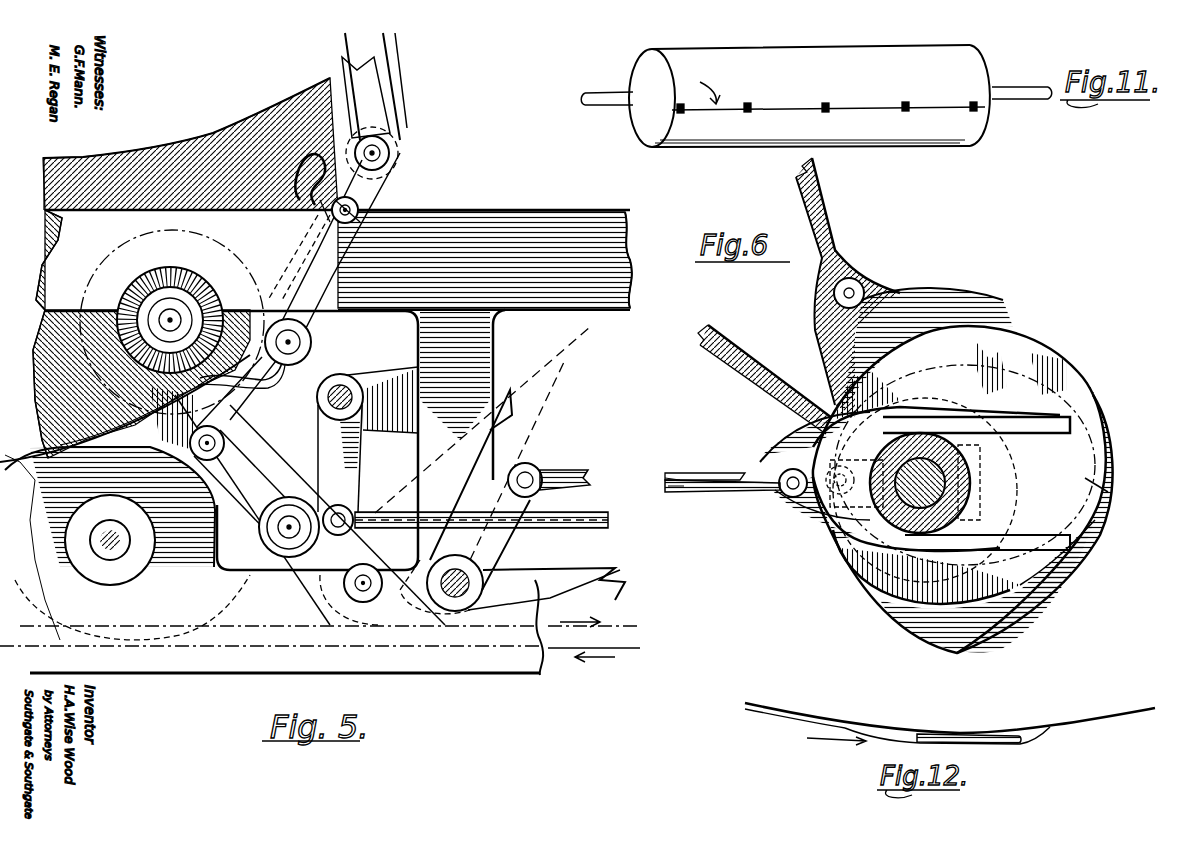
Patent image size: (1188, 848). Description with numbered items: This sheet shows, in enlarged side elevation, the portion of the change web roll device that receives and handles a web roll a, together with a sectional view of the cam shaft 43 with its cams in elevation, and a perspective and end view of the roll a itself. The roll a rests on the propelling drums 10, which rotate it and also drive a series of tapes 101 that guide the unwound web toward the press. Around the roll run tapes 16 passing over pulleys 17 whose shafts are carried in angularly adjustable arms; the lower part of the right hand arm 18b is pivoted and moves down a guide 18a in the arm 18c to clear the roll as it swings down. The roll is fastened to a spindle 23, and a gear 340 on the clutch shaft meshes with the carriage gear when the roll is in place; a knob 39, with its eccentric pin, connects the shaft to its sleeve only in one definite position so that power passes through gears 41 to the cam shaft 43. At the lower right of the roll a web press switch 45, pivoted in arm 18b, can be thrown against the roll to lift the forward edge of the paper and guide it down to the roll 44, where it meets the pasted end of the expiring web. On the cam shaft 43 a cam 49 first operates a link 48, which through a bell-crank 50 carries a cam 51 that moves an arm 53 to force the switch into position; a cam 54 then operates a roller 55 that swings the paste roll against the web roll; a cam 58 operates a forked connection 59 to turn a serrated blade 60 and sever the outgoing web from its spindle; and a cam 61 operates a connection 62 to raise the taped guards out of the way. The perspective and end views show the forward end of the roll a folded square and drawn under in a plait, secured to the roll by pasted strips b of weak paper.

In FIG. 5, the web roll a is at (235, 125).
In FIG. 11, the web roll a is at (809, 96).
In FIG. 12, the web roll a is at (1090, 720).
In FIG. 11, the pasted strips b is at (682, 104).
In FIG. 12, the pasted strips b is at (1022, 742).
In FIG. 5, the propelling drums 10 is at (110, 543).
In FIG. 5, the tapes 16 is at (392, 58).
In FIG. 5, the pulleys 17 is at (400, 160).
In FIG. 5, the guide 18a is at (385, 132).
In FIG. 5, the right hand arm 18b is at (312, 336).
In FIG. 5, the arm 18c is at (368, 92).
In FIG. 11, the spindle 23 is at (594, 92).
In FIG. 5, the knob 39 is at (172, 322).
In FIG. 5, the gears 41 is at (170, 268).
In FIG. 6, the cam shaft 43 is at (1108, 492).
In FIG. 5, the roll 44 is at (330, 605).
In FIG. 5, the web press switch 45 is at (178, 570).
In FIG. 5, the link 48 is at (580, 520).
In FIG. 6, the link 48 is at (683, 492).
In FIG. 6, the cam 49 is at (835, 555).
In FIG. 5, the bell-crank 50 is at (352, 472).
In FIG. 5, the cam 51 is at (310, 510).
In FIG. 5, the arm 53 is at (238, 330).
In FIG. 6, the cam 54 is at (928, 293).
In FIG. 6, the roller 55 is at (862, 280).
In FIG. 6, the cam 58 is at (1053, 343).
In FIG. 5, the forked connection 59 is at (583, 460).
In FIG. 6, the forked connection 59 is at (762, 480).
In FIG. 5, the serrated blade 60 is at (505, 412).
In FIG. 6, the cam 61 is at (1110, 447).
In FIG. 6, the connection 62 is at (725, 348).
In FIG. 5, the tapes 101 is at (630, 630).
In FIG. 5, the gear 340 is at (242, 235).